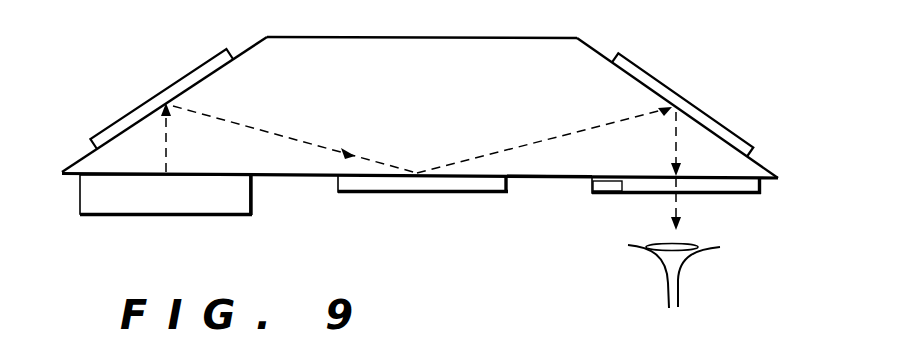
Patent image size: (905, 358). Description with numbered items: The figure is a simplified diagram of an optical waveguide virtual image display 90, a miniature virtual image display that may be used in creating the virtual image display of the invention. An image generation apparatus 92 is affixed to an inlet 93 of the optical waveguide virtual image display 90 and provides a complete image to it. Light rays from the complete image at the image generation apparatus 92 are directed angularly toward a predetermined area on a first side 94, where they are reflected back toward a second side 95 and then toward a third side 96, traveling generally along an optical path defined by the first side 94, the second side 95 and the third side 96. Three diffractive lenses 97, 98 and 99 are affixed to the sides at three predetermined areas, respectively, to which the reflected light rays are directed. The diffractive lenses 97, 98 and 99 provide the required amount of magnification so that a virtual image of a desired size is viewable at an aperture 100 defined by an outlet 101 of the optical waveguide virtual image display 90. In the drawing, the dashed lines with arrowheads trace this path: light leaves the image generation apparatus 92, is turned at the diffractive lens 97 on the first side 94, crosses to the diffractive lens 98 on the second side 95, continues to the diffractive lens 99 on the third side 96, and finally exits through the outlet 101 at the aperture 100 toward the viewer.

The optical waveguide virtual image display 90 is at (443, 295).
The image generation apparatus 92 is at (137, 217).
The inlet 93 is at (297, 179).
The first side 94 is at (77, 160).
The second side 95 is at (555, 181).
The third side 96 is at (761, 166).
The diffractive lens 97 is at (180, 79).
The diffractive lens 98 is at (446, 194).
The diffractive lens 99 is at (666, 86).
The aperture 100 is at (738, 196).
The outlet 101 is at (622, 195).